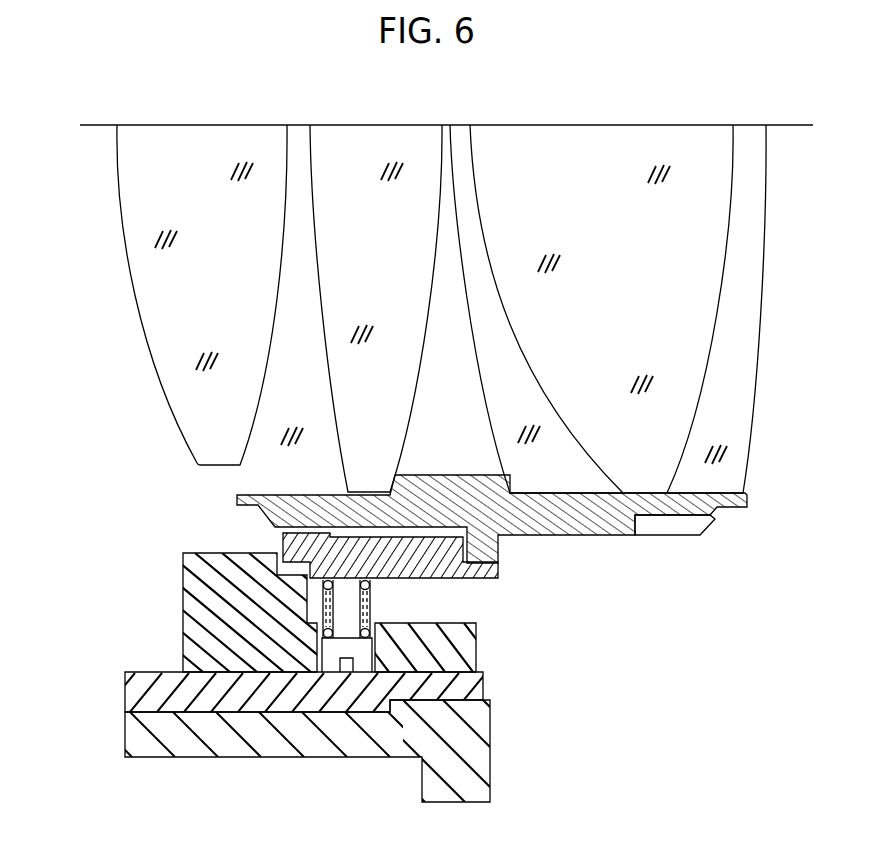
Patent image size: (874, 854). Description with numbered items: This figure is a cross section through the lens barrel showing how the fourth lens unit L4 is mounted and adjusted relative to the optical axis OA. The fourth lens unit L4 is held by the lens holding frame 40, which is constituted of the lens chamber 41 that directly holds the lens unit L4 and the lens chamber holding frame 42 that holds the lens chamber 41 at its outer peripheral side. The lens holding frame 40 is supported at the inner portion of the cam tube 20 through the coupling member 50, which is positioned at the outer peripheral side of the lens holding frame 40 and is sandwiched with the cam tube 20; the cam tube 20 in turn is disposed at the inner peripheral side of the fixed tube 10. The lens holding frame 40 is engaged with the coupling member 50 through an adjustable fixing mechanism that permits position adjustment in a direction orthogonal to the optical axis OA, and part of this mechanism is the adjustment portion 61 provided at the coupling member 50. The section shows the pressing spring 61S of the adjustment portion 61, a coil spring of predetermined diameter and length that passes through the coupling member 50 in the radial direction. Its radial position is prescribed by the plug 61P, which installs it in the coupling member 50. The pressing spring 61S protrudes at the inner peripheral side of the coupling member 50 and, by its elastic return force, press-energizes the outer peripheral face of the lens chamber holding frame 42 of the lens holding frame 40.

The optical axis OA is at (790, 127).
The fourth lens unit L4 is at (156, 386).
The lens holding frame 40 is at (492, 551).
The lens chamber 41 is at (600, 536).
The lens chamber holding frame 42 is at (486, 578).
The coupling member 50 is at (183, 620).
The adjustment portion 61 is at (440, 702).
The pressing spring 61S is at (372, 595).
The plug 61P is at (357, 673).
The cam tube 20 is at (484, 683).
The fixed tube 10 is at (312, 760).